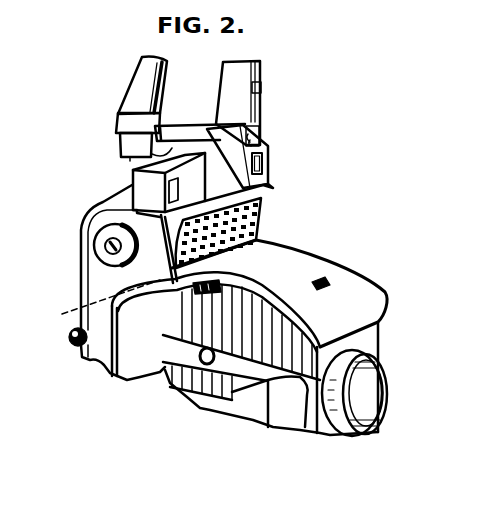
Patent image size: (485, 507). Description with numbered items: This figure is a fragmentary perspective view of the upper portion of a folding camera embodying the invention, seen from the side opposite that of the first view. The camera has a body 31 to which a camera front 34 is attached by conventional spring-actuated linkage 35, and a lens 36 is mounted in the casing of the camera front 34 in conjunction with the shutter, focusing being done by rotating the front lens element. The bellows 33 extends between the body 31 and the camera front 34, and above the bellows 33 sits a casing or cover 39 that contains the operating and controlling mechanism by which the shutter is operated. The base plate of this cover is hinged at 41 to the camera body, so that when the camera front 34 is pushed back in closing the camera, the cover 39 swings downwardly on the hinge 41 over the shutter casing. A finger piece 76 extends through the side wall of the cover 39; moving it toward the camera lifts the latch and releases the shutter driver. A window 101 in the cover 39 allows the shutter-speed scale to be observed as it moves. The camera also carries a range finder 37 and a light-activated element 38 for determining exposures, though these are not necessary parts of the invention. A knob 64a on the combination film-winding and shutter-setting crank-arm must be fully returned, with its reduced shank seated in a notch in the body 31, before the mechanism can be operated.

The body 31 is at (95, 285).
The hinge 41 is at (97, 305).
The knob 64a is at (71, 342).
The bellows 33 is at (185, 387).
The spring-actuated linkage 35 is at (230, 403).
The camera front 34 is at (367, 337).
The lens 36 is at (355, 388).
The casing or cover 39 is at (307, 263).
The window 101 is at (330, 280).
The light-activated element 38 is at (260, 213).
The range finder 37 is at (262, 162).
The finger piece 76 is at (213, 284).